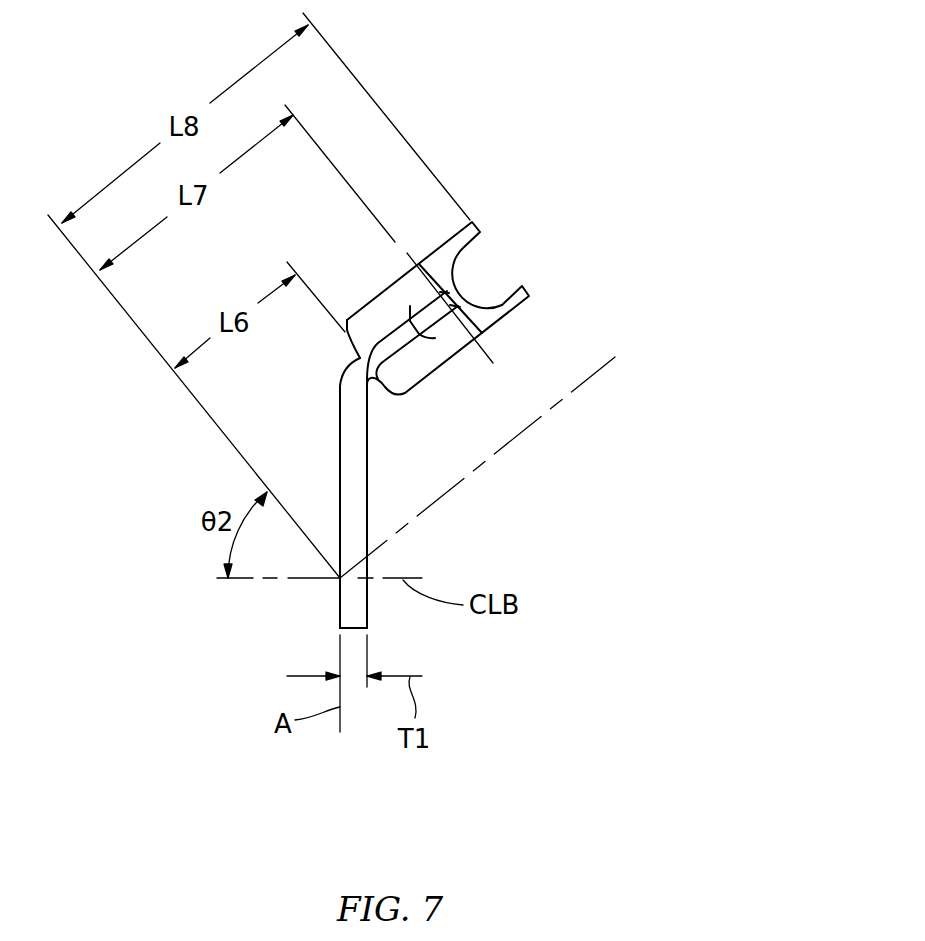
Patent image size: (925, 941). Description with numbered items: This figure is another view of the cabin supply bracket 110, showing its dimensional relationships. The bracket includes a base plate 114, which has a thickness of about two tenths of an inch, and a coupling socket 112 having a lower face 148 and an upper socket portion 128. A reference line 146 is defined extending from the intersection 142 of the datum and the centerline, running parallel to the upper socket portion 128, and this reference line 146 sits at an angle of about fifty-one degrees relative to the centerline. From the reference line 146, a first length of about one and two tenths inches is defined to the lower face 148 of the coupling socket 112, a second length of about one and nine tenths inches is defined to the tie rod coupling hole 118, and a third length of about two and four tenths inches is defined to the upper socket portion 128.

The cabin supply bracket 110 is at (664, 141).
The coupling socket 112 is at (529, 292).
The base plate 114 is at (360, 505).
The tie rod coupling hole 118 is at (407, 260).
The upper socket portion 128 is at (478, 222).
The intersection 142 is at (340, 582).
The reference line 146 is at (150, 343).
The lower face 148 is at (345, 333).